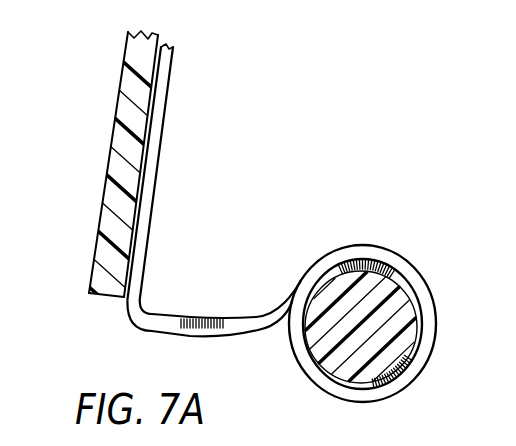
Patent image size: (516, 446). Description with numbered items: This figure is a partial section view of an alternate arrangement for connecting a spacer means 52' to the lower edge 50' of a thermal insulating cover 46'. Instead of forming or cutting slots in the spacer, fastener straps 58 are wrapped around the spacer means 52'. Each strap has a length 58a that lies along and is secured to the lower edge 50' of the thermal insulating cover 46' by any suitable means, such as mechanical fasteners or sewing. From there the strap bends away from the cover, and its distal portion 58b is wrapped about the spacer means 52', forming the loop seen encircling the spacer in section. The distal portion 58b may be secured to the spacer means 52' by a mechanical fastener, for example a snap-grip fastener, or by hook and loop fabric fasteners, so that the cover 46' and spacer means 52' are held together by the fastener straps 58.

The thermal insulating cover 46' is at (102, 182).
The lower edge of thermal insulating cover 50' is at (102, 194).
The fastener straps 58 is at (307, 225).
The length of fastener strap 58a is at (152, 172).
The distal portion of fastener strap 58b is at (424, 318).
The spacer means 52' is at (332, 338).